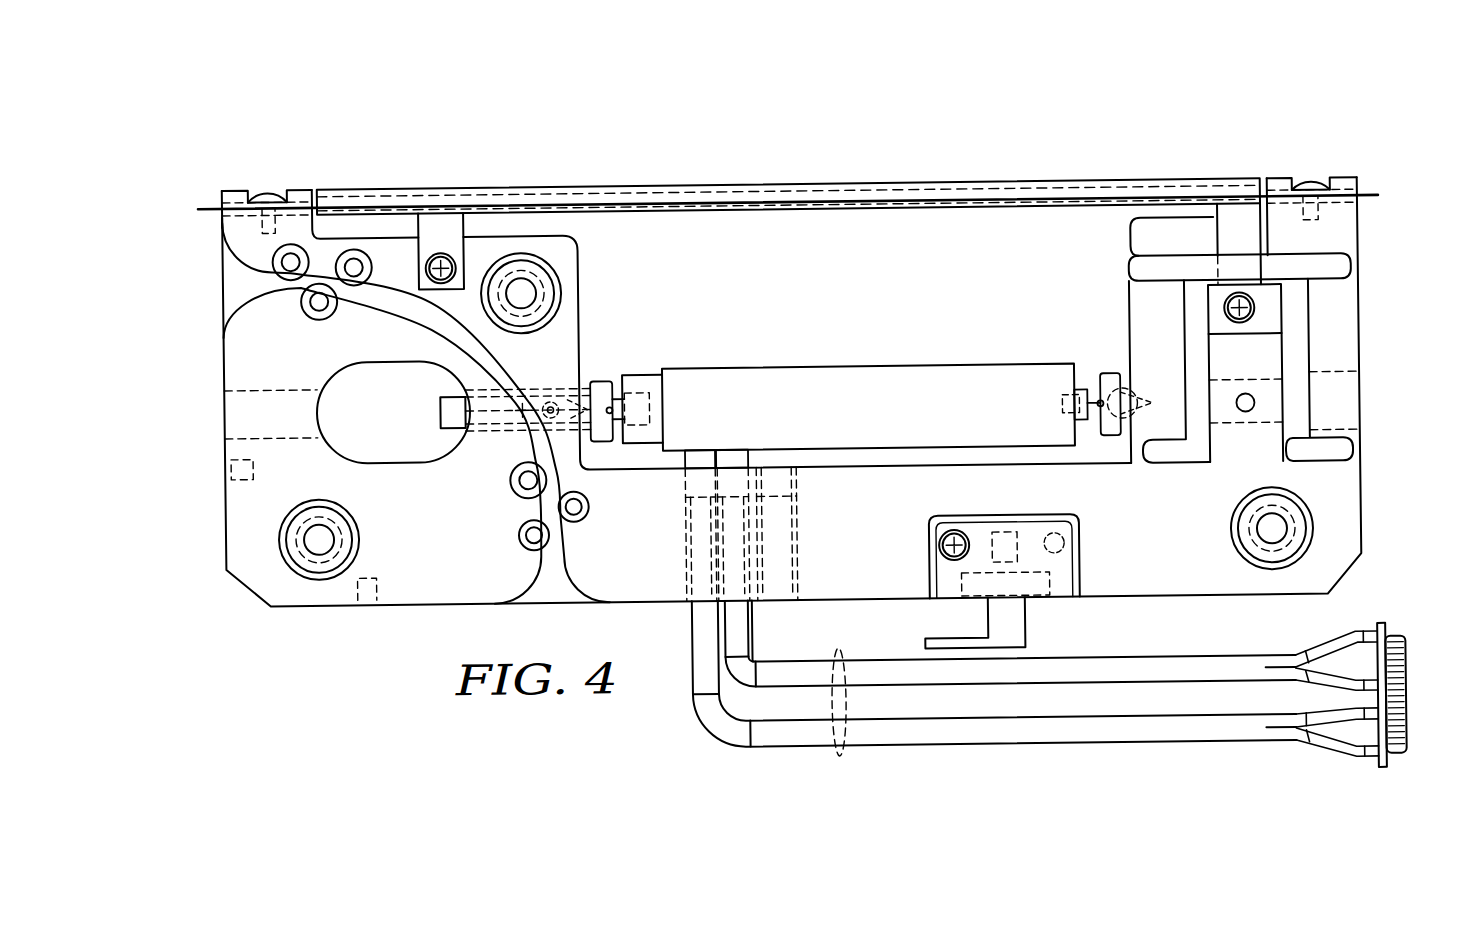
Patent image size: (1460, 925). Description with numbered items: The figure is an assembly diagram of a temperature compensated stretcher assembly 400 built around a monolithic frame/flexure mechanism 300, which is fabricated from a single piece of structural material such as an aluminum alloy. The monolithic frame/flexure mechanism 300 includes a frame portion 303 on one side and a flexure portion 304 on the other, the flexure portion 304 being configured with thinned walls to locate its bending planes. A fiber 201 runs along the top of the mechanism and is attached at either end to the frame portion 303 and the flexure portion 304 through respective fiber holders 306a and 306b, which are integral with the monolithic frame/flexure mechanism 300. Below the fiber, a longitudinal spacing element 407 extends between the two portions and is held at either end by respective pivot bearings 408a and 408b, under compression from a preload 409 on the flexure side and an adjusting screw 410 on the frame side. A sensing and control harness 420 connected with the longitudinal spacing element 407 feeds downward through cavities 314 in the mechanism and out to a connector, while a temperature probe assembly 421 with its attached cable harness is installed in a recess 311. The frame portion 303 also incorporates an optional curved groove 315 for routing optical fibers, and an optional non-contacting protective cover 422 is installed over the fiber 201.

The temperature compensated stretcher assembly 400 is at (612, 100).
The monolithic frame/flexure mechanism 300 is at (1360, 531).
The frame portion 303 is at (222, 372).
The flexure portion 304 is at (1360, 314).
The fiber holder 306a is at (230, 190).
The fiber holder 306b is at (1283, 191).
The recess 311 is at (1077, 568).
The cavities 314 is at (680, 546).
The curved groove 315 is at (238, 293).
The fiber 201 is at (1375, 208).
The longitudinal spacing element 407 is at (870, 374).
The pivot bearing 408a is at (617, 365).
The pivot bearing 408b is at (1098, 369).
The preload 409 is at (1293, 406).
The adjusting screw 410 is at (437, 413).
The sensing and control harness 420 is at (835, 767).
The temperature probe assembly 421 is at (1058, 605).
The non-contacting protective cover 422 is at (982, 191).